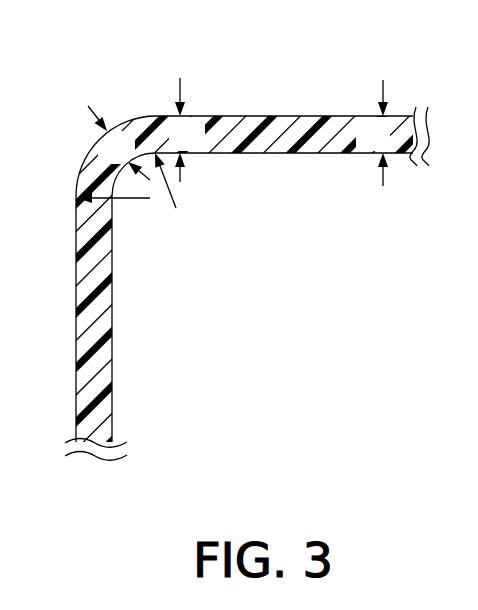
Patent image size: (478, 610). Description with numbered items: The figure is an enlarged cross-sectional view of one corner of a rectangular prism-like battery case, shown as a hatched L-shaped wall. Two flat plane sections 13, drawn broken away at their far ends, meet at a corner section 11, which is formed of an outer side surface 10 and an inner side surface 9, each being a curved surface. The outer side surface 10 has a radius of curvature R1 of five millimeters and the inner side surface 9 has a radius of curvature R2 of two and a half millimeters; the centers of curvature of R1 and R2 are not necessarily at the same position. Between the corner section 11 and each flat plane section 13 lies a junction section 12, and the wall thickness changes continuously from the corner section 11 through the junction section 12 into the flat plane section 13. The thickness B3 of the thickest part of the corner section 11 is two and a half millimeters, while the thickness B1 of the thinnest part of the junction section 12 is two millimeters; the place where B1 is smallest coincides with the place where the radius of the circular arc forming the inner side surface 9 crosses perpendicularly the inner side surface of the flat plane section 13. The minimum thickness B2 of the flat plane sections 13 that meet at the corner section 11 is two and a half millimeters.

The inner side surface 9 is at (130, 173).
The outer side surface 10 is at (91, 151).
The corner section 11 is at (119, 131).
The junction section 12 is at (160, 115).
The flat plane section 13 is at (400, 118).
The thickness of the thinnest part of the junction section B1 is at (188, 130).
The minimum thickness of the flat plane section B2 is at (373, 133).
The thickness of the thickest part of the corner section B3 is at (119, 143).
The radius of curvature of the outer surface of the corner section R1 is at (113, 215).
The radius of curvature of the inner surface of the corner section R2 is at (185, 187).